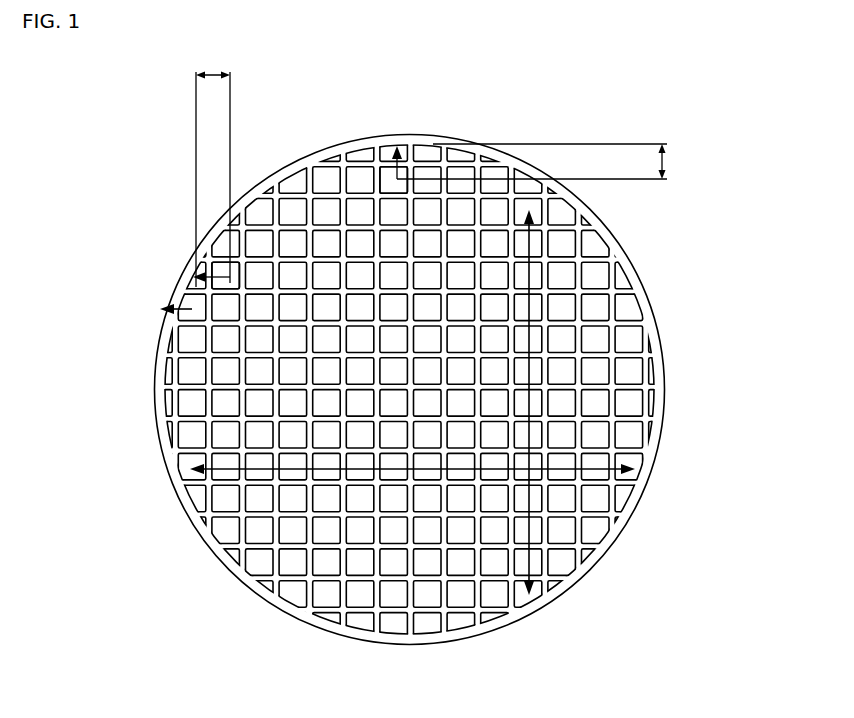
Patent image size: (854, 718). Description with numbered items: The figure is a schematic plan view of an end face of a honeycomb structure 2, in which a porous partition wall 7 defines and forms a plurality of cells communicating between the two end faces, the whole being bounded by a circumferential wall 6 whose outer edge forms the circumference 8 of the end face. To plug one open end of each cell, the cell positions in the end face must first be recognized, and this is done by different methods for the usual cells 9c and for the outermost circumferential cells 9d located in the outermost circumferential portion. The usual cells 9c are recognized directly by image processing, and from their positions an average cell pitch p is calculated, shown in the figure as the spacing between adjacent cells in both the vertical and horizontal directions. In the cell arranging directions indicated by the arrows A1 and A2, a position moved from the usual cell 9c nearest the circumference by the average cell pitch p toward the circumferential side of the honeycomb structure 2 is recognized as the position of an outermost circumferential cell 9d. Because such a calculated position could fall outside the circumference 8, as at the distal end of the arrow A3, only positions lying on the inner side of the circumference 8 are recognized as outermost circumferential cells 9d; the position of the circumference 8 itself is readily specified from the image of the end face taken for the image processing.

The honeycomb structure 2 is at (637, 508).
The circumferential wall 6 is at (187, 505).
The partition wall 7 is at (593, 292).
The circumference 8 is at (153, 397).
The usual cell 9c is at (390, 187).
The outermost circumferential cell 9d is at (388, 152).
The average cell pitch p is at (440, 168).
The cell arranging direction arrow A1 is at (523, 345).
The cell arranging direction arrow A2 is at (361, 472).
The arrow A3 is at (170, 308).